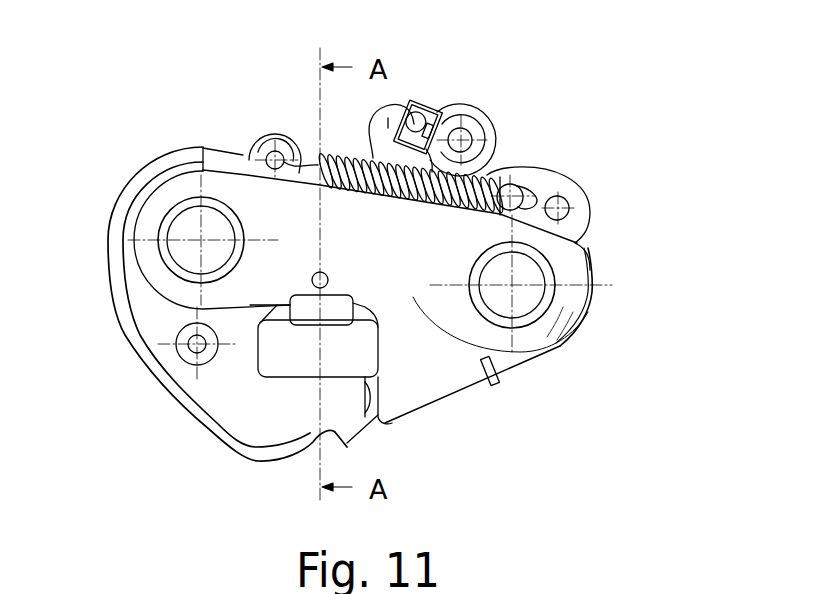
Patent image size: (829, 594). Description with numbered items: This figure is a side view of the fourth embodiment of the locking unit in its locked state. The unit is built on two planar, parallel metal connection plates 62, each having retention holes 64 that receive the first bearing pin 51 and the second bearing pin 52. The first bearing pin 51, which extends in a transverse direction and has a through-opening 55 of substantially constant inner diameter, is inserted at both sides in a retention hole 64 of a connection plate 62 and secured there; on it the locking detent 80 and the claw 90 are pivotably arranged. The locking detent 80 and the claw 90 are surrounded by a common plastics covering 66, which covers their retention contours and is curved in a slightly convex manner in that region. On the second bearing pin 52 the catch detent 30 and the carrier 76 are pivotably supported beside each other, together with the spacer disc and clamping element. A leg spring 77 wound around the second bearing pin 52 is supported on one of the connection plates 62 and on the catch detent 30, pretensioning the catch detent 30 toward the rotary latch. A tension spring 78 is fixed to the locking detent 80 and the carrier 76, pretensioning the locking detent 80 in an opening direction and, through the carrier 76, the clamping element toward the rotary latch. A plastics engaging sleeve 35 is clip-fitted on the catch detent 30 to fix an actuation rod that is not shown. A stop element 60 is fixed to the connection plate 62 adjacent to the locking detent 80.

The catch detent 30 is at (495, 162).
The engaging sleeve 35 is at (420, 103).
The first bearing pin 51 is at (193, 200).
The second bearing pin 52 is at (548, 290).
The through-opening 55 is at (190, 218).
The stop element 60 is at (345, 310).
The connection plate 62 is at (540, 347).
The retention hole 64 is at (190, 253).
The covering 66 is at (246, 418).
The carrier 76 is at (528, 172).
The leg spring 77 is at (497, 378).
The tension spring 78 is at (303, 147).
The locking detent 80 is at (170, 384).
The claw 90 is at (385, 115).